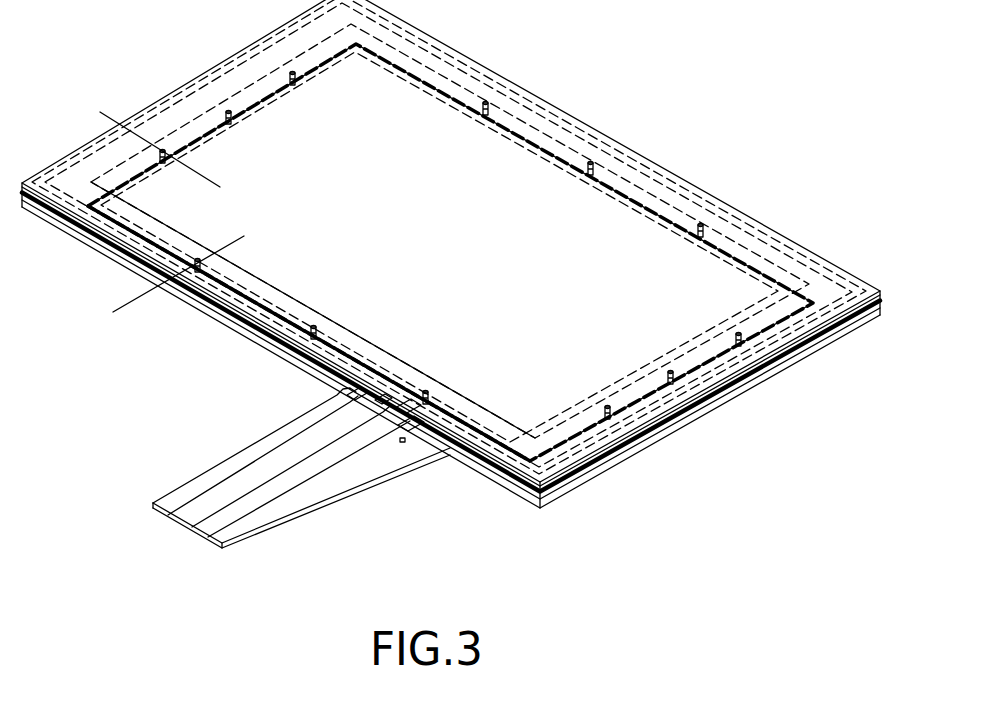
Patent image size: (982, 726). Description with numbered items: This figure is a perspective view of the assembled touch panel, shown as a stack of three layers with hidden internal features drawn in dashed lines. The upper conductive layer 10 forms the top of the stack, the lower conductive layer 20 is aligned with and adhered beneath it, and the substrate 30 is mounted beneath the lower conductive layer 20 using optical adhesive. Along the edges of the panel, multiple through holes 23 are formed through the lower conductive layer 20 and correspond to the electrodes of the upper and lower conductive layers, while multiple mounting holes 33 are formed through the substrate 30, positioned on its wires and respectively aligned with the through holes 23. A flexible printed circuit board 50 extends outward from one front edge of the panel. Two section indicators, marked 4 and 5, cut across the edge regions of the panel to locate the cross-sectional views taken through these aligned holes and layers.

The upper conductive layer 10 is at (668, 420).
The lower conductive layer 20 is at (628, 450).
The substrate 30 is at (593, 478).
The through holes 23 is at (290, 342).
The mounting holes 33 is at (298, 353).
The flexible printed circuit board 50 is at (295, 486).
The section line 4- 4 is at (122, 314).
The section line 5- 5 is at (95, 114).